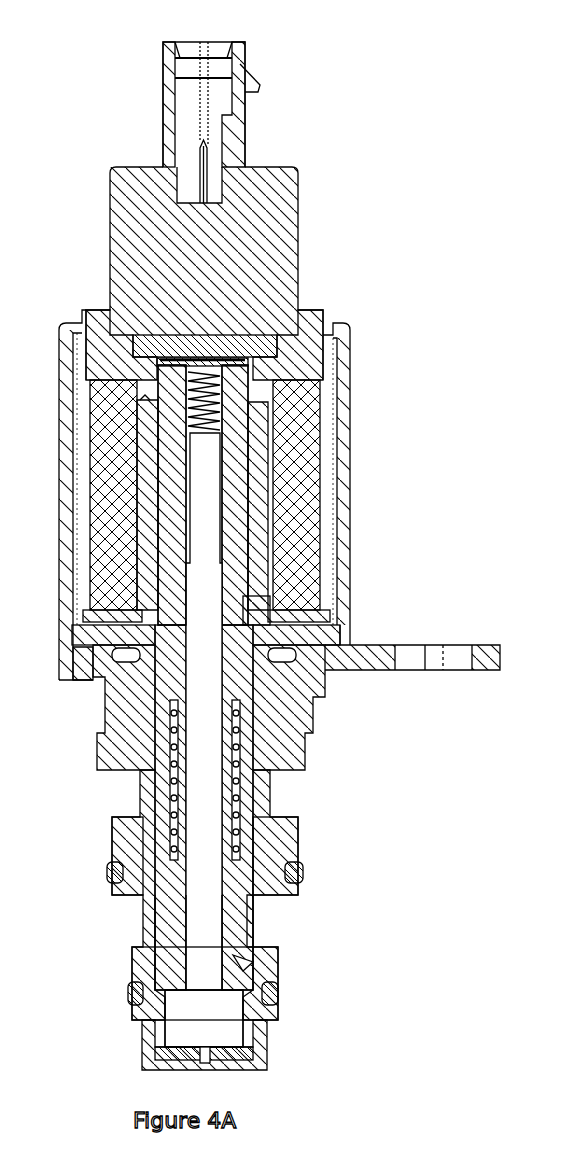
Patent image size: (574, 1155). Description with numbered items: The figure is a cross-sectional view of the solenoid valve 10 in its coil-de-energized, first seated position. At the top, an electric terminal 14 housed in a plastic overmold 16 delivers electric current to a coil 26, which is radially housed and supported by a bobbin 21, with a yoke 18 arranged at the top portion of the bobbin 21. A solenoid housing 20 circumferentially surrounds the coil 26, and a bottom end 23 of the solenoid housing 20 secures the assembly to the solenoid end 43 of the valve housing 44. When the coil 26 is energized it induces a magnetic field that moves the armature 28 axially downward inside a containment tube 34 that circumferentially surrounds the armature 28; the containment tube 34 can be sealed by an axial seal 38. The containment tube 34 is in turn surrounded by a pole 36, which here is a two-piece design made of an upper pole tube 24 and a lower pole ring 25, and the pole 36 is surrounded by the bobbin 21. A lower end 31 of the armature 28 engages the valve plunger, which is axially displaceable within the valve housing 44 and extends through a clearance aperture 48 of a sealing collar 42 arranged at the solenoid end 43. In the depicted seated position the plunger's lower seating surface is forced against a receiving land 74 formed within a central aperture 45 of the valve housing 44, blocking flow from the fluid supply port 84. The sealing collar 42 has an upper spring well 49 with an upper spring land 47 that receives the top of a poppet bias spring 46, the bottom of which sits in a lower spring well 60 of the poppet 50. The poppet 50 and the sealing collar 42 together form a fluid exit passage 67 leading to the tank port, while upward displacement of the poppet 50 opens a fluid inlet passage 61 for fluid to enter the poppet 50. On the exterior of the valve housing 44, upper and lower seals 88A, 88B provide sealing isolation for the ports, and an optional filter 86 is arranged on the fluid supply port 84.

The solenoid valve 10 is at (302, 113).
The electric terminal 14 is at (207, 163).
The plastic overmold 16 is at (278, 207).
The yoke 18 is at (172, 337).
The solenoid housing 20 is at (340, 333).
The bobbin 21 is at (312, 325).
The bottom end 23 is at (70, 676).
The upper pole tube 24 is at (258, 452).
The lower pole ring 25 is at (82, 636).
The coil 26 is at (312, 397).
The armature 28 is at (236, 548).
The lower end 31 is at (260, 603).
The containment tube 34 is at (248, 497).
The pole 36 is at (343, 632).
The axial seal 38 is at (125, 658).
The sealing collar 42 is at (250, 693).
The solenoid end 43 is at (308, 697).
The valve housing 44 is at (300, 748).
The central aperture 45 is at (227, 1027).
The poppet bias spring 46 is at (172, 800).
The upper spring land 47 is at (207, 672).
The clearance aperture 48 is at (205, 672).
The upper spring well 49 is at (237, 760).
The poppet 50 is at (258, 833).
The lower spring well 60 is at (172, 848).
The fluid inlet passage 61 is at (165, 907).
The fluid exit passage 67 is at (242, 790).
The receiving land 74 is at (237, 958).
The fluid supply port 84 is at (197, 1033).
The filter 86 is at (268, 1060).
The upper seal 88A is at (303, 872).
The lower seal 88B is at (130, 993).